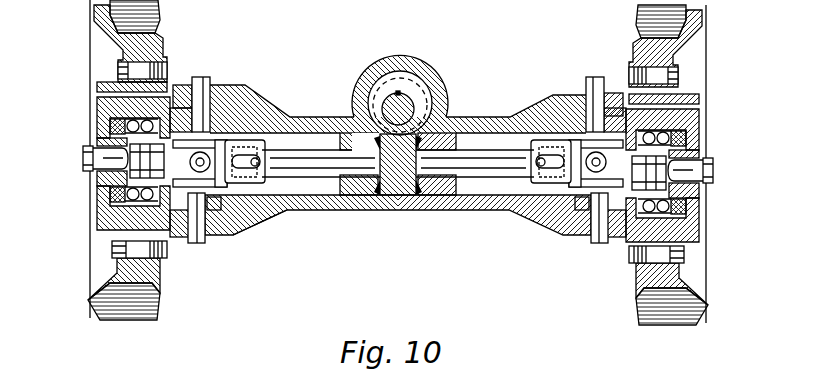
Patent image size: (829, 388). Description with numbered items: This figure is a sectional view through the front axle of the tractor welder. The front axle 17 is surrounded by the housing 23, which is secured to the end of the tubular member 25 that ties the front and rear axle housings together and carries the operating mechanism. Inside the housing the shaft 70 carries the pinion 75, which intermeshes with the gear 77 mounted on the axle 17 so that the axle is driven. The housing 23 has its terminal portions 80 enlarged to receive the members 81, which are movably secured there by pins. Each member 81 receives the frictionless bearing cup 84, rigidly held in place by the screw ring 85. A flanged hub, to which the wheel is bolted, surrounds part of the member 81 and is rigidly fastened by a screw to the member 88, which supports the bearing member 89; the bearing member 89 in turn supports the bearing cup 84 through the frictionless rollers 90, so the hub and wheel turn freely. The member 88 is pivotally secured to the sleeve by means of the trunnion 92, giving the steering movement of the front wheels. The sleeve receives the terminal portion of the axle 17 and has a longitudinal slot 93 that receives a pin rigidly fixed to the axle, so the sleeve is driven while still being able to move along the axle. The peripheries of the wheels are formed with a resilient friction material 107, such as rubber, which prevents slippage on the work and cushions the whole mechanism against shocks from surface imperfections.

The front axle 17 is at (471, 160).
The housing 23 is at (264, 108).
The tubular member 25 is at (427, 72).
The shaft 70 is at (388, 103).
The pinion 75 is at (393, 84).
The gear 77 is at (398, 197).
The terminal portion 80 is at (223, 92).
The member 81 is at (217, 213).
The frictionless bearing cup 84 is at (110, 101).
The screw ring 85 is at (110, 124).
The member 88 is at (183, 84).
The bearing member 89 is at (160, 162).
The frictionless rollers 90 is at (120, 124).
The trunnion 92 is at (205, 167).
The longitudinal slot 93 is at (270, 221).
The resilient friction material 107 is at (137, 322).